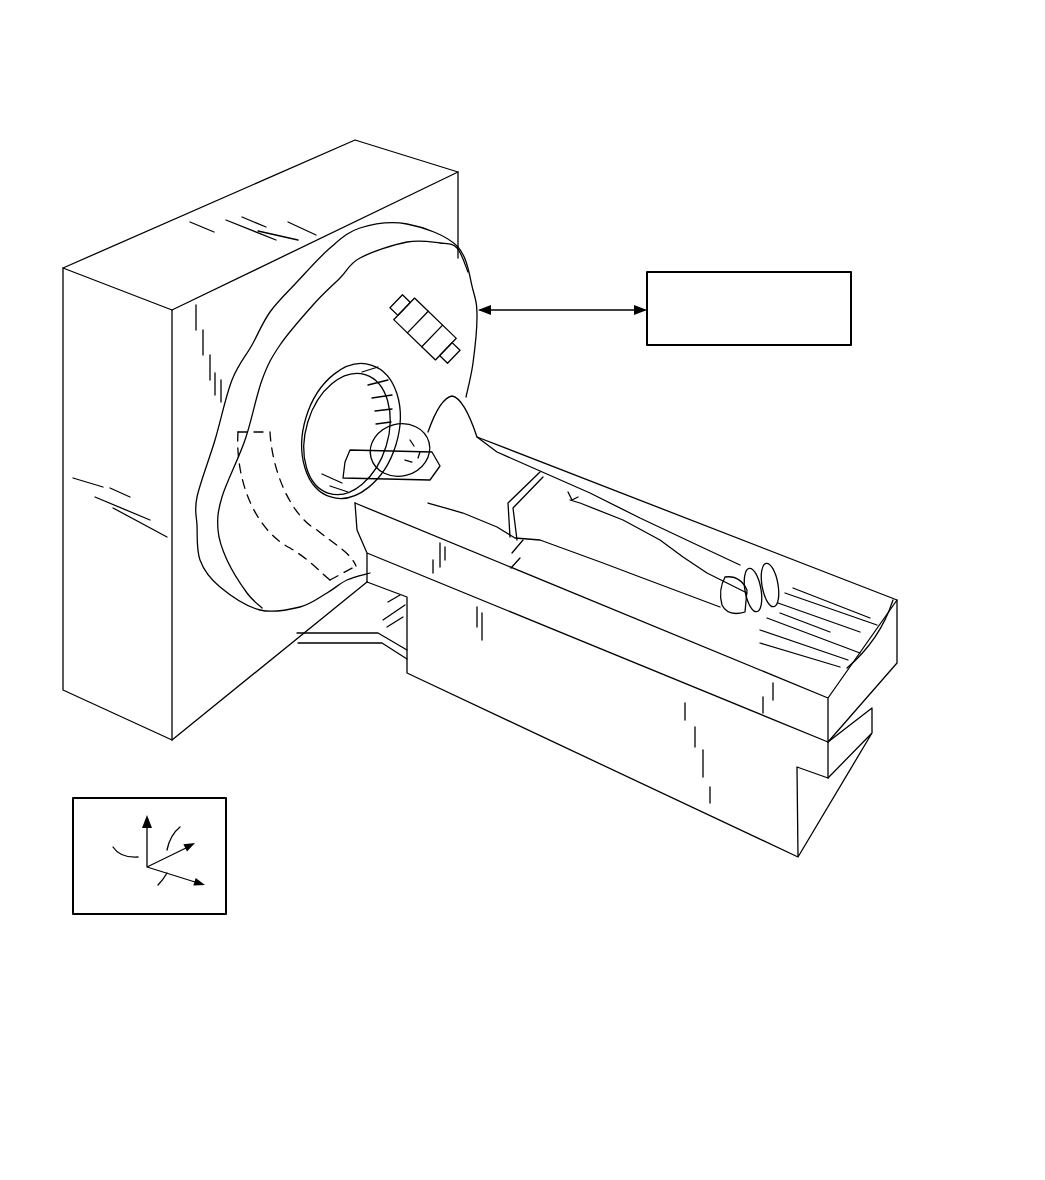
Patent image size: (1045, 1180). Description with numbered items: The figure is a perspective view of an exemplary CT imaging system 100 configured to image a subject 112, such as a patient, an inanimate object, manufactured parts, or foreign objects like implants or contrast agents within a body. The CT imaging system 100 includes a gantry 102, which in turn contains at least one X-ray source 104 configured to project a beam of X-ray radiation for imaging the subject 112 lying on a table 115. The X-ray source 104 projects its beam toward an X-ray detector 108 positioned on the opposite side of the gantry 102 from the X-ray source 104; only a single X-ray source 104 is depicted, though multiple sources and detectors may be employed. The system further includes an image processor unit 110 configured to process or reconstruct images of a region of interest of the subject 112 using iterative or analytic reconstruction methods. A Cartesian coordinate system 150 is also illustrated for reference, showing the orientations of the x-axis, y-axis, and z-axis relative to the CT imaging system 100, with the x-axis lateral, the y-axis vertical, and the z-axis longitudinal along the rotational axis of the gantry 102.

The CT imaging system 100 is at (792, 58).
The gantry 102 is at (356, 350).
The X-ray source 104 is at (445, 323).
The X-ray detector 108 is at (317, 557).
The image processor unit 110 is at (760, 272).
The subject 112 is at (498, 475).
The table 115 is at (823, 583).
The Cartesian coordinate system 150 is at (130, 795).